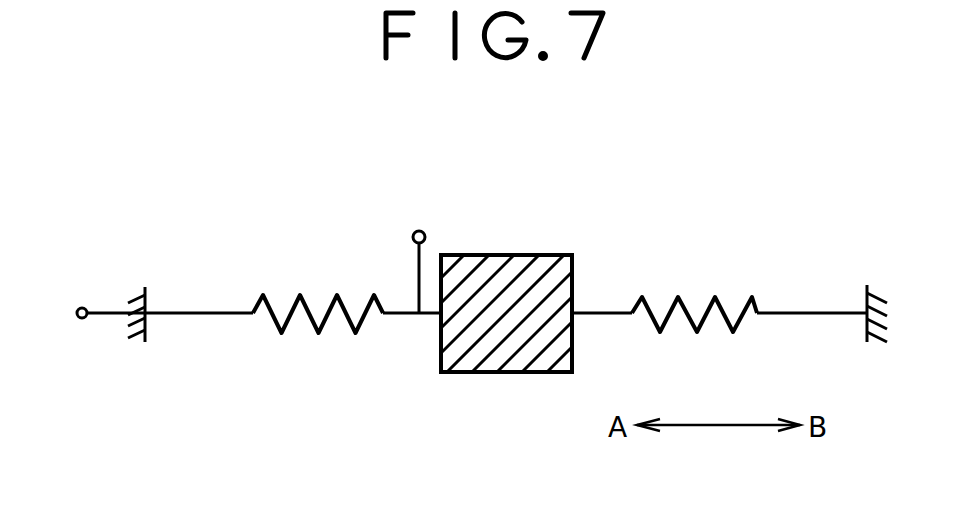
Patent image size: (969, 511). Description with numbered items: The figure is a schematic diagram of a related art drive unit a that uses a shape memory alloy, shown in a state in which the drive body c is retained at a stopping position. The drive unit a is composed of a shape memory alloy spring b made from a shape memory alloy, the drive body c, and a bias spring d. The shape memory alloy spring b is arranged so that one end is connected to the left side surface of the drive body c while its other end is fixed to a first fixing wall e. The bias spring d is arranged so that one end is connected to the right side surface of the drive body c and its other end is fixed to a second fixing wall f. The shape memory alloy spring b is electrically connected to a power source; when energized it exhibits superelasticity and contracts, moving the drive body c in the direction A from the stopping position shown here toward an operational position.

The drive unit a is at (742, 197).
The shape memory alloy spring b is at (312, 300).
The drive body c is at (520, 255).
The bias spring d is at (712, 300).
The first fixing wall e is at (147, 320).
The second fixing wall f is at (866, 330).